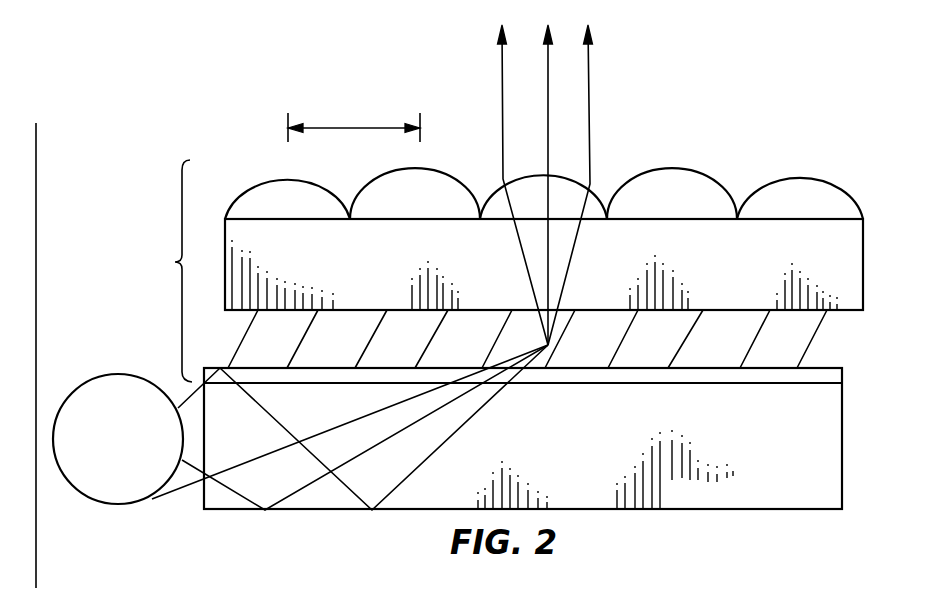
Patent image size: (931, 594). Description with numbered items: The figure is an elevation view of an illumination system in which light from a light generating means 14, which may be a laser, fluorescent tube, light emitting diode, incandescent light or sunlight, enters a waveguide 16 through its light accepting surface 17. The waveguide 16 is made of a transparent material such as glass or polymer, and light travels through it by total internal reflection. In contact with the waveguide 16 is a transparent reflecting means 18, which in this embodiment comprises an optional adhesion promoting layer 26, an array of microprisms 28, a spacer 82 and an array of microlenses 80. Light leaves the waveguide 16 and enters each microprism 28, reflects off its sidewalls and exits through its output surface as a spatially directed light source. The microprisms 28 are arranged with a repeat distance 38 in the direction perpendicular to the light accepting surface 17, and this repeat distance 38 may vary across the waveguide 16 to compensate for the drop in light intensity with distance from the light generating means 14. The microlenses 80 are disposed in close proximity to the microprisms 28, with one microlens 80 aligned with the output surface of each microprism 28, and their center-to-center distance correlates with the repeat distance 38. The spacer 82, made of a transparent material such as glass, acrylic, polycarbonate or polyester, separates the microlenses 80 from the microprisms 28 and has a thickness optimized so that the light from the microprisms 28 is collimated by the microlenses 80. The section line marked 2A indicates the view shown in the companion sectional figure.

The section line 2A- 2A is at (27, 133).
The light generating means 14 is at (120, 373).
The waveguide 16 is at (800, 497).
The light accepting surface 17 is at (204, 499).
The transparent reflecting means 18 is at (166, 271).
The adhesion promoting layer 26 is at (812, 384).
The microprisms 28 is at (812, 340).
The repeat distance 38 is at (340, 127).
The microlenses 80 is at (753, 182).
The spacer 82 is at (738, 265).